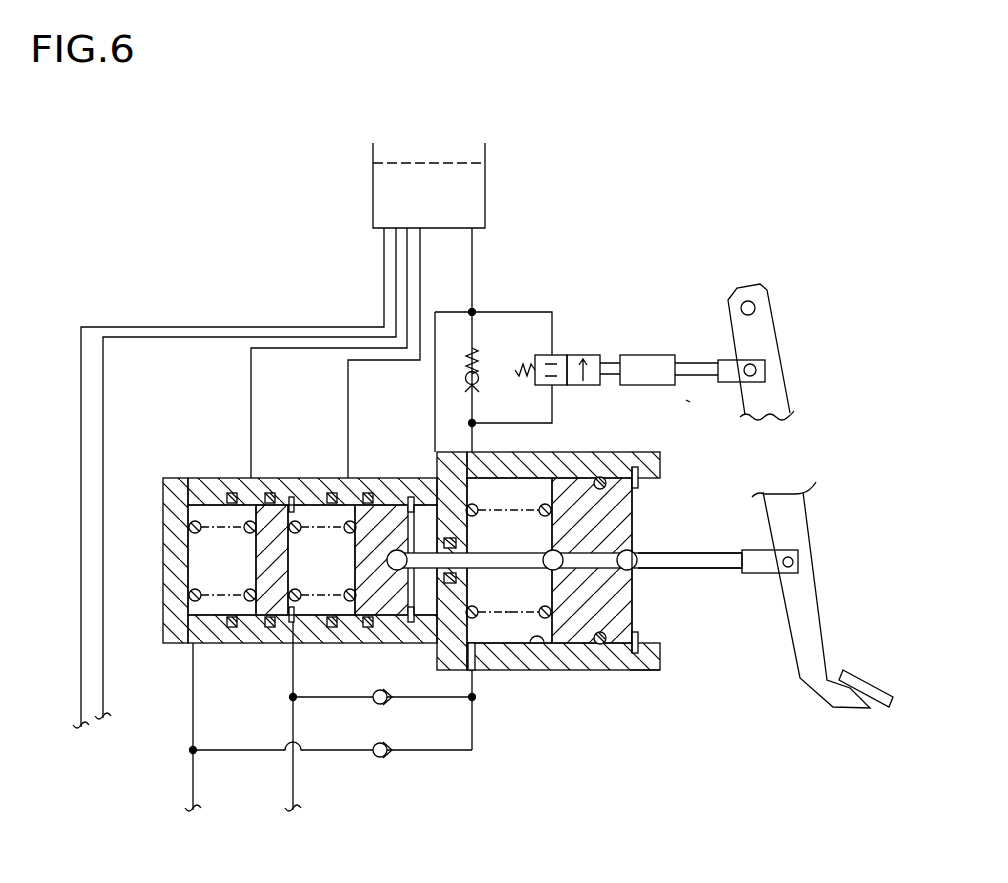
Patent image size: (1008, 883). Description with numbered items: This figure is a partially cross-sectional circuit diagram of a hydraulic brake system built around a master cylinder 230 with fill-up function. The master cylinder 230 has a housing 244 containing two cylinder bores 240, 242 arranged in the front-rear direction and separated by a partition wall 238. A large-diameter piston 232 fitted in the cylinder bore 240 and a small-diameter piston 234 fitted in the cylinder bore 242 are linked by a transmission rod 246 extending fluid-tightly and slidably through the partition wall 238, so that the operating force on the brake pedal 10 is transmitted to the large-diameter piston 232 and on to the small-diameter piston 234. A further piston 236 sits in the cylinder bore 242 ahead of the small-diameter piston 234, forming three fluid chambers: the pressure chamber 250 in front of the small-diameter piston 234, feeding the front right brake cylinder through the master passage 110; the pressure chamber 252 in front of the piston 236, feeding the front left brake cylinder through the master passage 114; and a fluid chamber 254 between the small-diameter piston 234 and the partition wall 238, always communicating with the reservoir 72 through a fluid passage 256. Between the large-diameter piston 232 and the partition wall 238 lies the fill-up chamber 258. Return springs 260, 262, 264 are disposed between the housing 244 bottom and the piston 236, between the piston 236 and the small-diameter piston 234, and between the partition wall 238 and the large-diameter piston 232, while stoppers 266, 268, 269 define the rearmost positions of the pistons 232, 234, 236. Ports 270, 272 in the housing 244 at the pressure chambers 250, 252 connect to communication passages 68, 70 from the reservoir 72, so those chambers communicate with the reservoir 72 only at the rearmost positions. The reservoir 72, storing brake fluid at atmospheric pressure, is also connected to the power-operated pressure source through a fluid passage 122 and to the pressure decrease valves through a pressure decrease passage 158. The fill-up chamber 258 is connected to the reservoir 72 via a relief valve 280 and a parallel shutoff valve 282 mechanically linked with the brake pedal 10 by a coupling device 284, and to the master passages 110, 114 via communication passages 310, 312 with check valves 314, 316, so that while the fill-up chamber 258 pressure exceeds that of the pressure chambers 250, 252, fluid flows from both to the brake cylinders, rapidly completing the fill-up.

The reservoir 72 is at (485, 198).
The pressure decrease passage 158 is at (81, 680).
The fluid passage 122 is at (103, 674).
The fluid passage 70 is at (251, 393).
The fluid passage 68 is at (348, 369).
The fluid passage 256 is at (432, 380).
The relief valve 280 is at (480, 351).
The shutoff valve 282 is at (559, 355).
The brake pedal 10 is at (768, 333).
The coupling device 284 is at (685, 402).
The master cylinder 230 is at (473, 591).
The cylinder bore 240 is at (548, 643).
The housing 244 is at (630, 670).
The port 272 is at (247, 485).
The piston 236 is at (280, 607).
The port 270 is at (343, 485).
The stopper 268 is at (407, 605).
The pressure chamber 252 is at (203, 512).
The cylinder bore 242 is at (193, 543).
The return spring 260 is at (193, 597).
The return spring 262 is at (295, 598).
The stopper 269 is at (290, 643).
The pressure chamber 250 is at (302, 512).
The small-diameter piston 234 is at (383, 518).
The fluid chamber 254 is at (427, 602).
The fill-up chamber 258 is at (535, 488).
The large-diameter piston 232 is at (648, 576).
The transmission rod 246 is at (522, 558).
The stopper 266 is at (663, 640).
The partition wall 238 is at (510, 612).
The return spring 264 is at (478, 600).
The master passage 114 is at (193, 777).
The master passage 110 is at (293, 783).
The communication passage 310 is at (310, 702).
The check valve 314 is at (388, 701).
The communication passage 312 is at (313, 752).
The check valve 316 is at (388, 754).